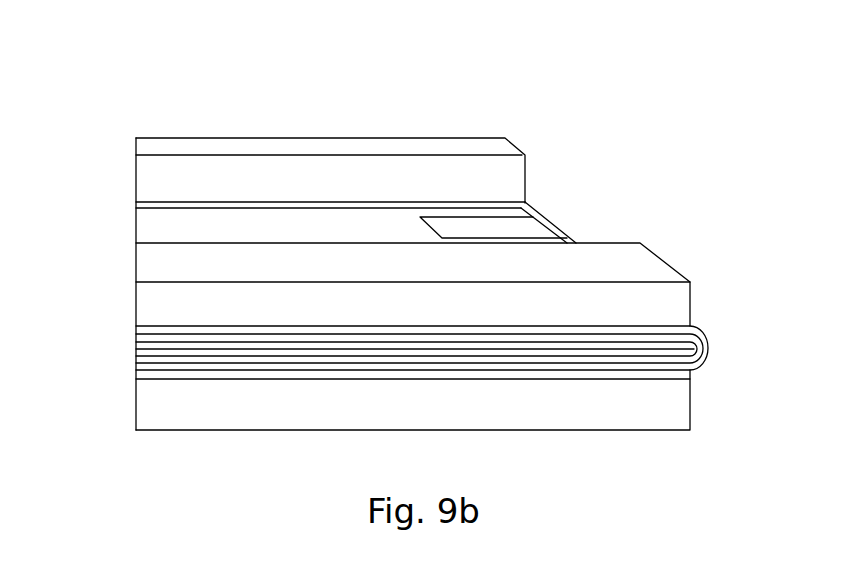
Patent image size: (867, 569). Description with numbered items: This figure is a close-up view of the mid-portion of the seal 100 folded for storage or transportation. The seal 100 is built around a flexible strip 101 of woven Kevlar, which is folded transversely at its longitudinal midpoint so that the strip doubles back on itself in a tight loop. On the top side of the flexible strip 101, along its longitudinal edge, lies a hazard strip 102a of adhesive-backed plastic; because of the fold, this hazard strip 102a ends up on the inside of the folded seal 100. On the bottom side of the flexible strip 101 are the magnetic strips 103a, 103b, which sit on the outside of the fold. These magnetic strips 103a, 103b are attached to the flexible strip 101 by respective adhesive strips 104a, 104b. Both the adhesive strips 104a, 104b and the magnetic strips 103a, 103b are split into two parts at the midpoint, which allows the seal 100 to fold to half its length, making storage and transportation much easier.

The seal 100 is at (530, 106).
The flexible strip 101 is at (528, 227).
The hazard strip 102a is at (136, 352).
The magnetic strip 103a is at (652, 292).
The magnetic strip 103b is at (353, 170).
The adhesive strip 104a is at (690, 328).
The adhesive strip 104b is at (528, 204).